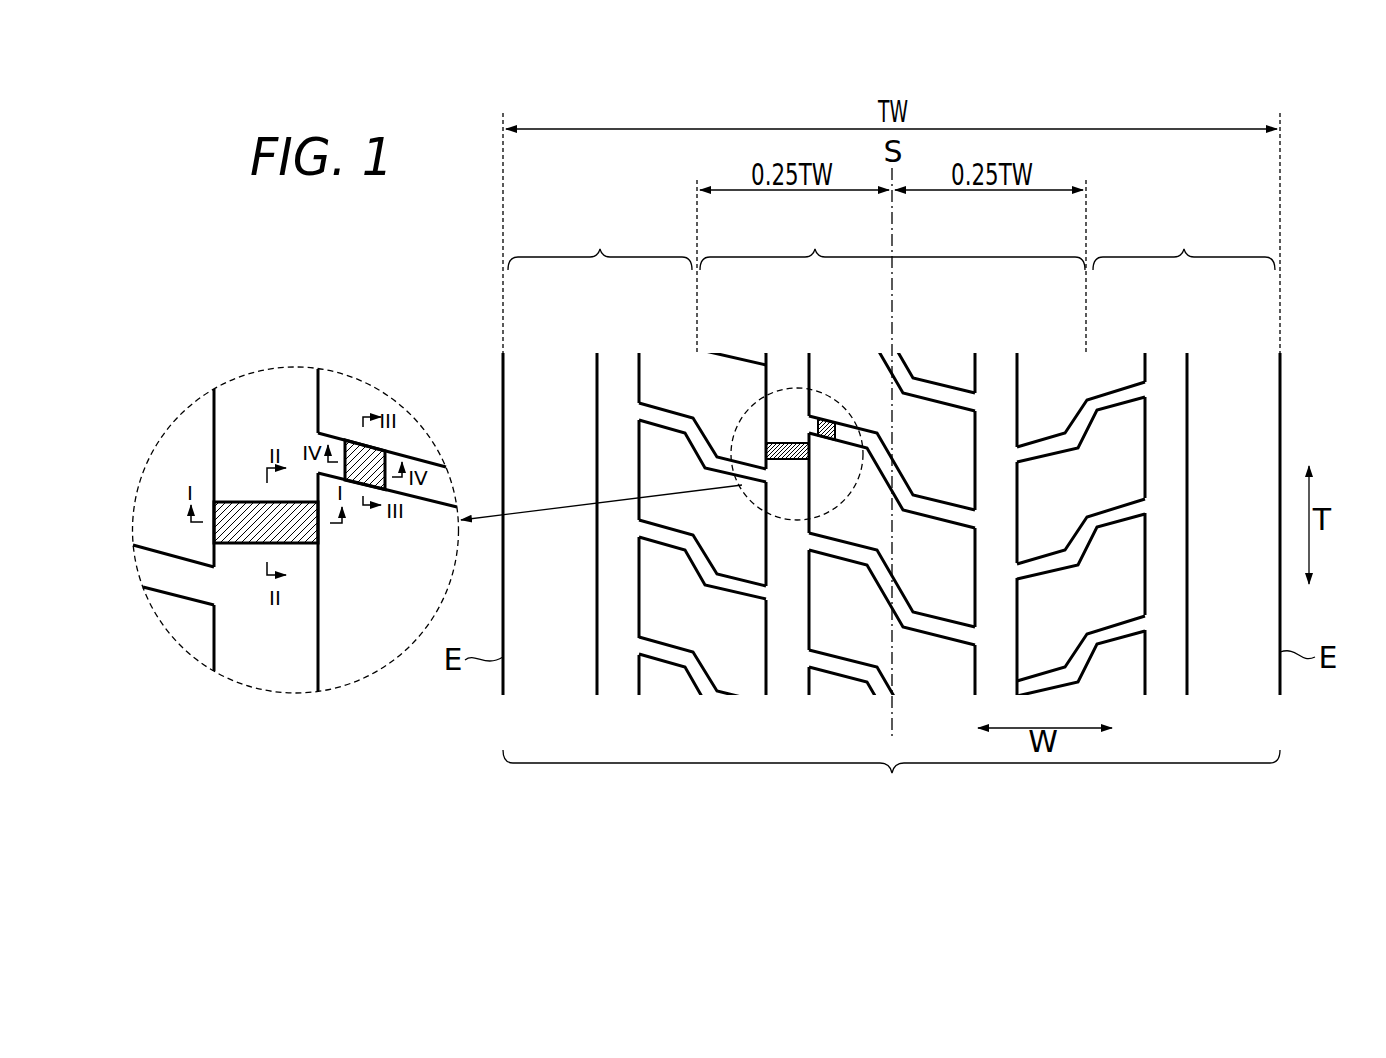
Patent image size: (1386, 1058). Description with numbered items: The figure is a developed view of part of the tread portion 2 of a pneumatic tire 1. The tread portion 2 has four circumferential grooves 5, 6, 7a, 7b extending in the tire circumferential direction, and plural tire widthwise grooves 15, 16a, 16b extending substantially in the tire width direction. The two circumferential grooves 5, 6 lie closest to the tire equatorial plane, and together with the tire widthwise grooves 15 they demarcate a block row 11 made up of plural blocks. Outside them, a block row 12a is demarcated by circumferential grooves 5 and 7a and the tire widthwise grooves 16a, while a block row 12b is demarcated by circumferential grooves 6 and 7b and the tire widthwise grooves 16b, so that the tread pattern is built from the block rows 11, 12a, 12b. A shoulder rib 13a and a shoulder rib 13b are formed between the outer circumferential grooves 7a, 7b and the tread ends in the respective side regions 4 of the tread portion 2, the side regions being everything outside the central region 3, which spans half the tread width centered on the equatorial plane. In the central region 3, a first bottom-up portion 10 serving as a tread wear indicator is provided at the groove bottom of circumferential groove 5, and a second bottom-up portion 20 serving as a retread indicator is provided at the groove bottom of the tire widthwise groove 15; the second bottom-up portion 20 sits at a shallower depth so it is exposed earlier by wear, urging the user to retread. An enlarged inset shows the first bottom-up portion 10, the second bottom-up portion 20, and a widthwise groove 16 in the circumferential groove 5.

The pneumatic tire 1 is at (484, 331).
The tread portion 2 is at (891, 779).
The central region 3 is at (892, 241).
The side region 4 is at (891, 241).
The circumferential groove 5 is at (781, 370).
The circumferential groove 6 is at (990, 370).
The circumferential groove 7a is at (613, 370).
The circumferential groove 7b is at (1161, 370).
The first bottom-up portion 10 is at (787, 462).
The block row 11 is at (849, 370).
The block row 12a is at (726, 397).
The block row 12b is at (1049, 370).
The shoulder rib 13a is at (546, 370).
The shoulder rib 13b is at (1227, 370).
The tire widthwise groove 15 is at (866, 440).
The lateral groove 16 is at (170, 577).
The tire widthwise groove 16a is at (670, 422).
The tire widthwise groove 16b is at (1046, 447).
The second bottom-up portion 20 is at (828, 441).